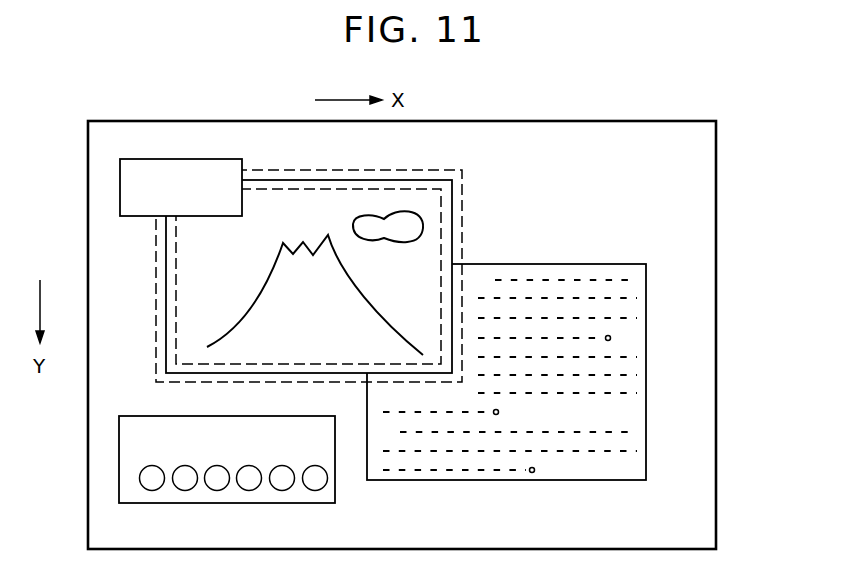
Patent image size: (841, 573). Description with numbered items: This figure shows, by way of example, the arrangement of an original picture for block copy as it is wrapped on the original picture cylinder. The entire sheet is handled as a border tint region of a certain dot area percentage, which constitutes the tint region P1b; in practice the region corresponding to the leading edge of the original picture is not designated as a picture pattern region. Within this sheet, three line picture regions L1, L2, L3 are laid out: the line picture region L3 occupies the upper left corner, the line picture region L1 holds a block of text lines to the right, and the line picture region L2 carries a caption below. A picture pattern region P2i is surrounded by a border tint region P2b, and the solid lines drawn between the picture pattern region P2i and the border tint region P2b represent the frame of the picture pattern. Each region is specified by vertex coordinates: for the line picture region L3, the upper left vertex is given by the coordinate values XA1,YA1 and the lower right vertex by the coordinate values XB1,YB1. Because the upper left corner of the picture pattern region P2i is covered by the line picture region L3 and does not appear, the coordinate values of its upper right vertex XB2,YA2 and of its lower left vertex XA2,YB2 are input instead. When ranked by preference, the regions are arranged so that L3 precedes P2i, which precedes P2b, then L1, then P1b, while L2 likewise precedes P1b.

The tint region P1b is at (628, 121).
The line picture region L1 is at (618, 481).
The line picture region L2 is at (310, 503).
The line picture region L3 is at (214, 159).
The picture pattern region P2i is at (349, 190).
The border tint region P2b is at (422, 170).
The coordinate values of upper left vertex XA1,YA1 is at (121, 159).
The coordinate values of lower right vertex XB1,YB1 is at (243, 216).
The coordinate values of upper right vertex XB2,YA2 is at (441, 189).
The coordinate values of lower left vertex XA2,YB2 is at (156, 382).